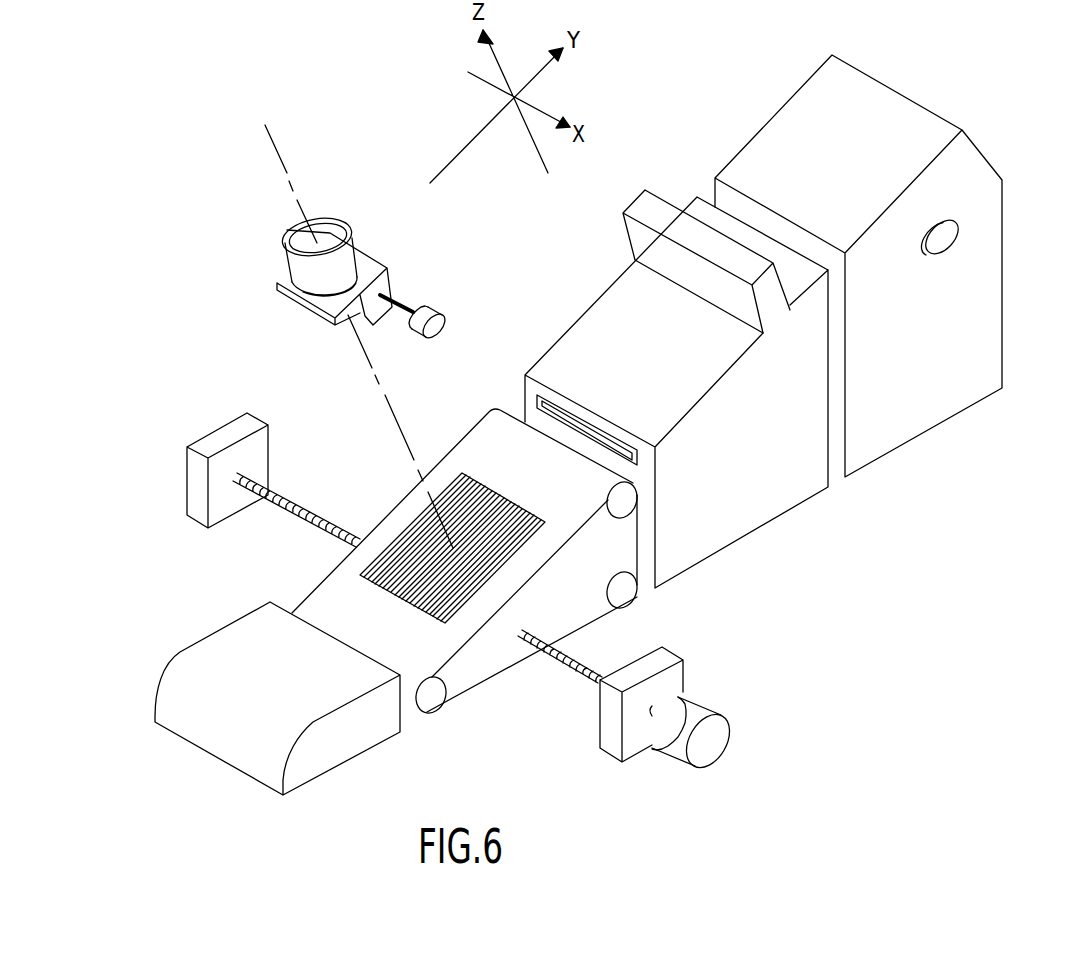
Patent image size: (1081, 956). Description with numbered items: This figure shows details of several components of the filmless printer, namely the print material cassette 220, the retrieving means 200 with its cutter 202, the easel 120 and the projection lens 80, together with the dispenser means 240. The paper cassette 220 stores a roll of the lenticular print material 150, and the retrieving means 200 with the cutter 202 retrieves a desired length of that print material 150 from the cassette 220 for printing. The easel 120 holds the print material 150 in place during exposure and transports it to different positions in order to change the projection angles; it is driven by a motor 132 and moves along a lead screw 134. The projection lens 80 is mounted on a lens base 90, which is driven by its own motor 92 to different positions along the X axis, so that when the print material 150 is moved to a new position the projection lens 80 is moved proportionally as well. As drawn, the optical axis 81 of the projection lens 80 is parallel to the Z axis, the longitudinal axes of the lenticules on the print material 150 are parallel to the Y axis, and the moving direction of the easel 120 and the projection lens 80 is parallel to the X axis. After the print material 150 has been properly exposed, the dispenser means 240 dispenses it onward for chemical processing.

The projection lens 80 is at (288, 258).
The optical axis 81 is at (287, 173).
The lens base 90 is at (308, 303).
The motor 92 is at (432, 309).
The easel 120 is at (480, 668).
The motor 132 is at (693, 706).
The lead screw 134 is at (307, 508).
The lenticular print material 150 is at (460, 490).
The retrieving means 200 is at (727, 524).
The cutter 202 is at (650, 203).
The paper cassette 220 is at (975, 172).
The dispenser means 240 is at (232, 633).